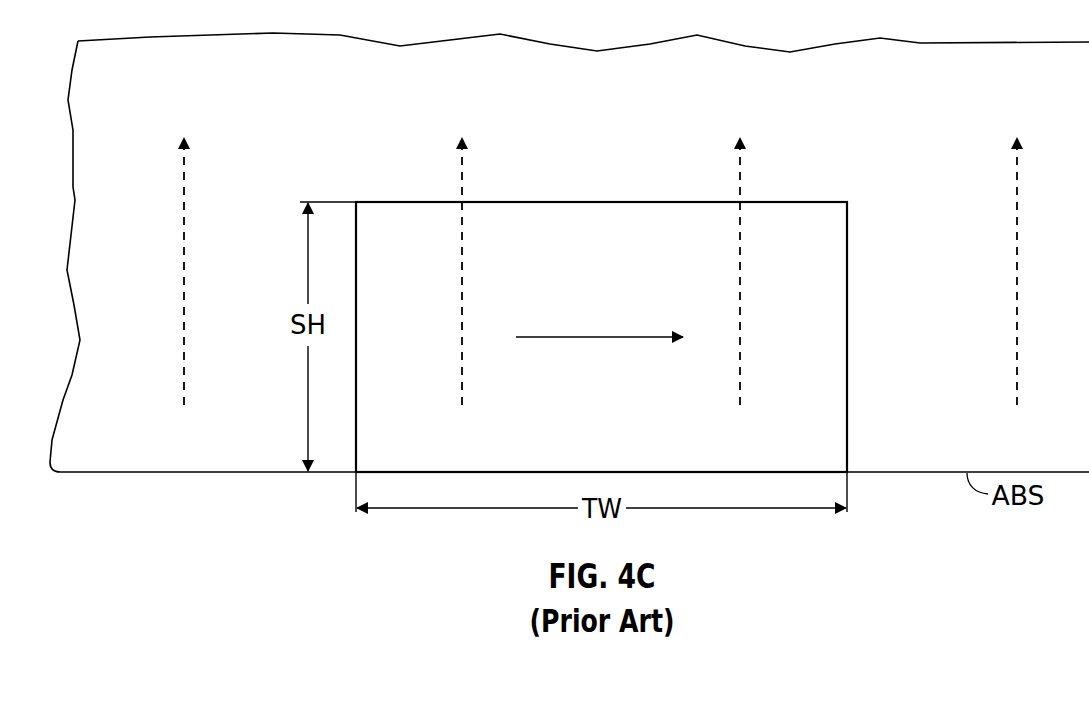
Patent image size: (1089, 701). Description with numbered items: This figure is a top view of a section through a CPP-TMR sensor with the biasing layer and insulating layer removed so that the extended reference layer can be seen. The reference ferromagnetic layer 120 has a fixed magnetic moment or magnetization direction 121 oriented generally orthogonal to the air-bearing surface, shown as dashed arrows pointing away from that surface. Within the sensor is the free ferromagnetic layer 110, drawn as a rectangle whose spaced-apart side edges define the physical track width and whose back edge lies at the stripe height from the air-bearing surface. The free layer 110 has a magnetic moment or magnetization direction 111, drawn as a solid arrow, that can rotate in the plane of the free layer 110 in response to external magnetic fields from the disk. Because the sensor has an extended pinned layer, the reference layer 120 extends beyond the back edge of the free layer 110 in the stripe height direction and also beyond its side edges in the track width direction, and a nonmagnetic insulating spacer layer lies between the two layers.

The free ferromagnetic layer 110 is at (432, 364).
The magnetization direction 111 is at (600, 338).
The reference ferromagnetic layer 120 is at (949, 364).
The magnetization direction 121 is at (184, 266).